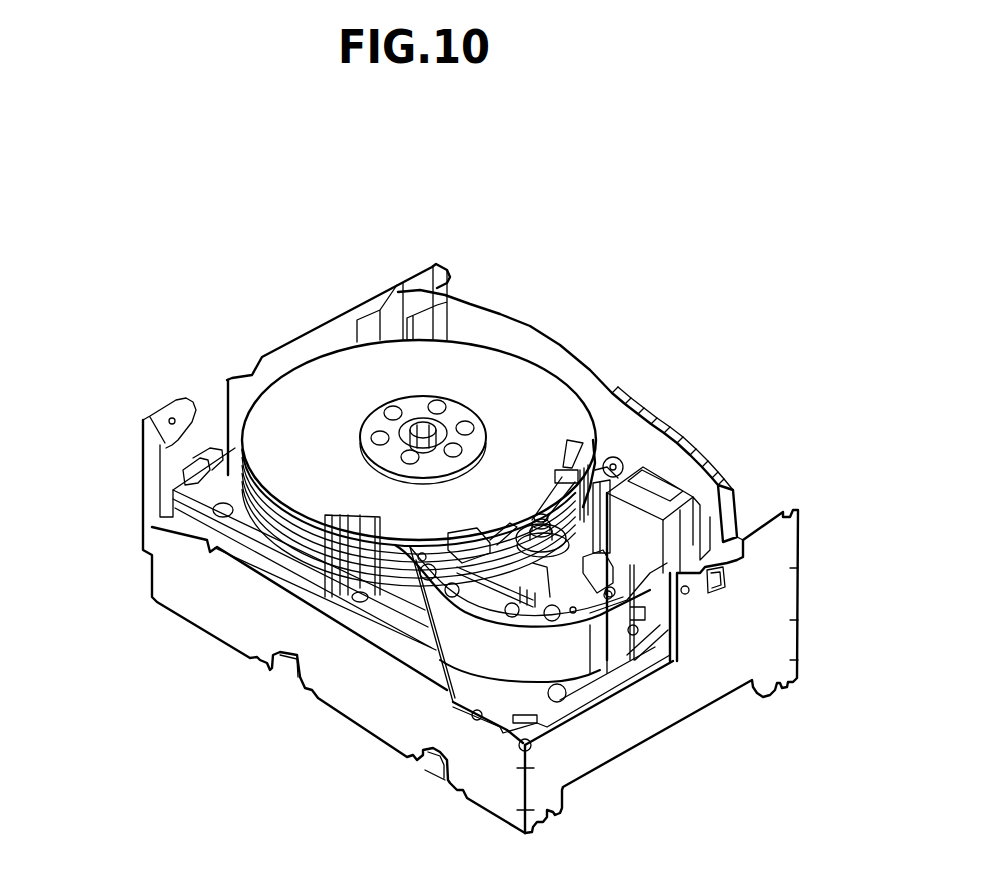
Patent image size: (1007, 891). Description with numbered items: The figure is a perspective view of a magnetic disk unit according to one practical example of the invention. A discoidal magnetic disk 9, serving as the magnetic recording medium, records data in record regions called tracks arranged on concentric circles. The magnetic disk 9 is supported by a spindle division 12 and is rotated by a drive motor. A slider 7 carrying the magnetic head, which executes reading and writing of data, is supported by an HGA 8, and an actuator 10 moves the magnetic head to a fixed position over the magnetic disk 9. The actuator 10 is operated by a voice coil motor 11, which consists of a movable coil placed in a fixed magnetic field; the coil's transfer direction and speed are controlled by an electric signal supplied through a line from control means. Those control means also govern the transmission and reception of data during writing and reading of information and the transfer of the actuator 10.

The slider 7 is at (583, 445).
The HGA 8 is at (566, 440).
The magnetic disk 9 is at (467, 352).
The actuator 10 is at (587, 523).
The voice coil motor 11 is at (463, 637).
The spindle division 12 is at (455, 425).